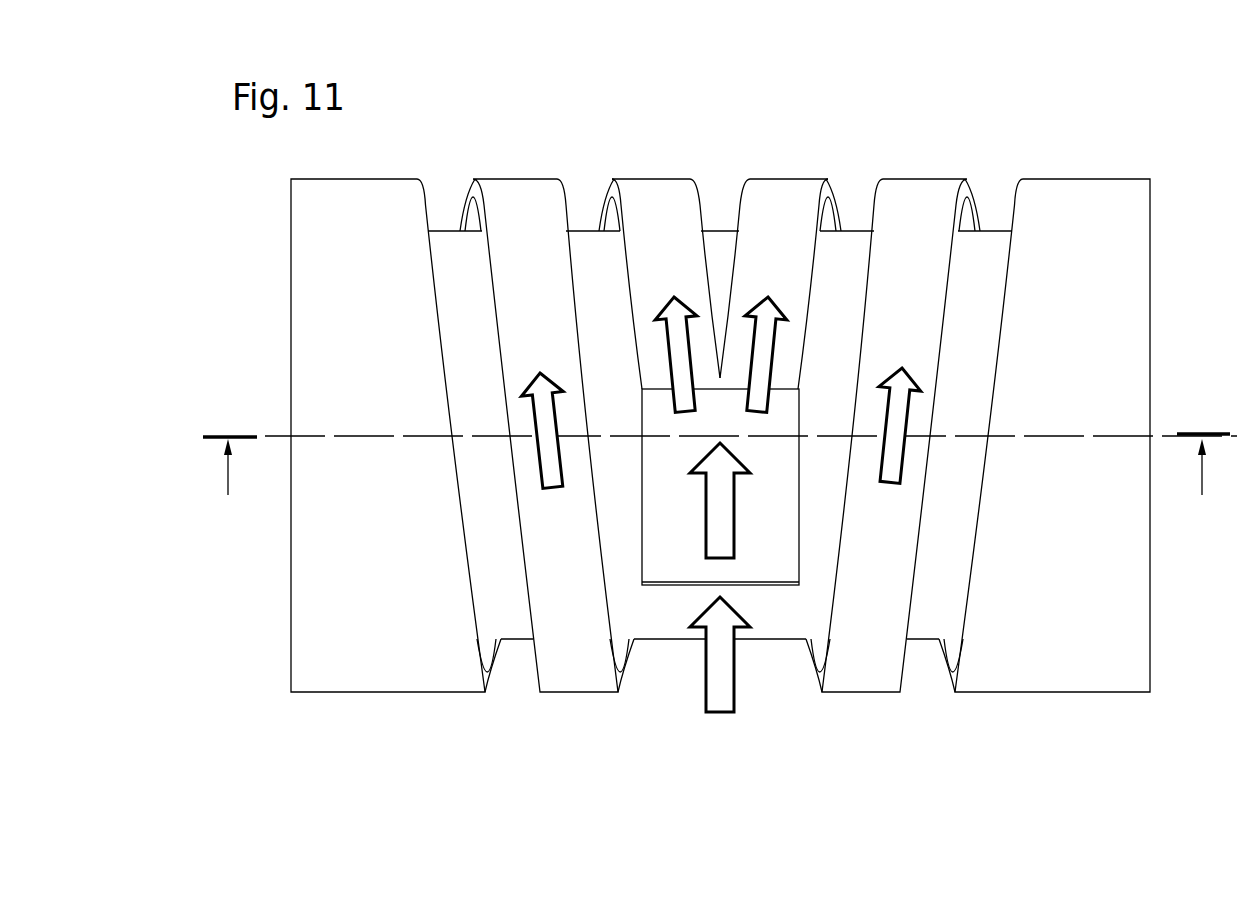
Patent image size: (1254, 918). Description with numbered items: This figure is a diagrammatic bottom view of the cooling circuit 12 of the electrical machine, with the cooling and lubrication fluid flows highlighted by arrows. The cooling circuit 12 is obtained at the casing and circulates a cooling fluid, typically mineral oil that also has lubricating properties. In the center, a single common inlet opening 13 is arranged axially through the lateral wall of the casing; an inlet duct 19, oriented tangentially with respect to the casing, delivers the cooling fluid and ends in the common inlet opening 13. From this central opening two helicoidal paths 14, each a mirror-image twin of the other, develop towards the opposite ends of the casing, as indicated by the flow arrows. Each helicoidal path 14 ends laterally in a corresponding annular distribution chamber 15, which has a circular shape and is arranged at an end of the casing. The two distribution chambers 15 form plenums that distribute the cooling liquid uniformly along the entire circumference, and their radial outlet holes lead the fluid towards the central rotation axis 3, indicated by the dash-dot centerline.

The central rotation axis 3 is at (1032, 432).
The cooling circuit 12 is at (1163, 86).
The common inlet opening 13 is at (681, 534).
The helicoidal path 14 is at (524, 193).
The annular distribution chamber 15 is at (373, 673).
The inlet duct 19 is at (767, 563).